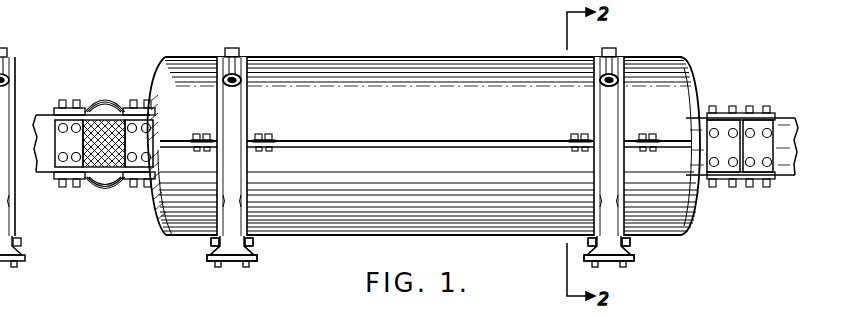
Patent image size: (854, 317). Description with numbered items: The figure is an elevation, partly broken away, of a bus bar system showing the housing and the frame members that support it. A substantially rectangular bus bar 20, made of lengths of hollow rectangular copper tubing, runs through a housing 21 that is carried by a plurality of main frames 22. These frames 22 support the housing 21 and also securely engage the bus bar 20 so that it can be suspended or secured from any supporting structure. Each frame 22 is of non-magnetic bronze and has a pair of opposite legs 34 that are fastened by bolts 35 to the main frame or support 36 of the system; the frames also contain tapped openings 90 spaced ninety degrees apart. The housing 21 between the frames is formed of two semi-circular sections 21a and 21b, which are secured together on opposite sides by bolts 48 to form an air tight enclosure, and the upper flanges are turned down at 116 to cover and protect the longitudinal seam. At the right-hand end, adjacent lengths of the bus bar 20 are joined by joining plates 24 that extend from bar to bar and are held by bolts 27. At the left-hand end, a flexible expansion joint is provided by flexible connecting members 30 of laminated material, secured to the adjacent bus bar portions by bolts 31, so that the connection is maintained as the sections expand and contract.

The bus bar 20 is at (53, 172).
The housing 21 is at (424, 147).
The housing section 21a is at (366, 58).
The housing section 21b is at (350, 238).
The main frame 22 is at (242, 52).
The joining plate 24 is at (771, 116).
The bolt 27 is at (759, 107).
The flexible connecting member 30 is at (105, 118).
The bolt 31 is at (72, 100).
The leg 34 is at (251, 255).
The bolt 35 is at (245, 262).
The main frame or support 36 is at (207, 258).
The bolt 48 is at (206, 133).
The tapped opening 90 is at (231, 74).
The turned-down flange portion 116 is at (497, 139).